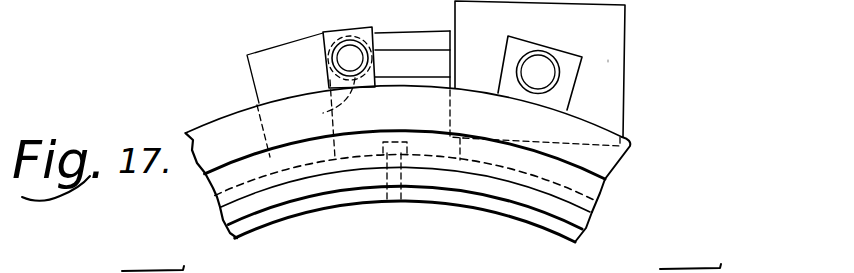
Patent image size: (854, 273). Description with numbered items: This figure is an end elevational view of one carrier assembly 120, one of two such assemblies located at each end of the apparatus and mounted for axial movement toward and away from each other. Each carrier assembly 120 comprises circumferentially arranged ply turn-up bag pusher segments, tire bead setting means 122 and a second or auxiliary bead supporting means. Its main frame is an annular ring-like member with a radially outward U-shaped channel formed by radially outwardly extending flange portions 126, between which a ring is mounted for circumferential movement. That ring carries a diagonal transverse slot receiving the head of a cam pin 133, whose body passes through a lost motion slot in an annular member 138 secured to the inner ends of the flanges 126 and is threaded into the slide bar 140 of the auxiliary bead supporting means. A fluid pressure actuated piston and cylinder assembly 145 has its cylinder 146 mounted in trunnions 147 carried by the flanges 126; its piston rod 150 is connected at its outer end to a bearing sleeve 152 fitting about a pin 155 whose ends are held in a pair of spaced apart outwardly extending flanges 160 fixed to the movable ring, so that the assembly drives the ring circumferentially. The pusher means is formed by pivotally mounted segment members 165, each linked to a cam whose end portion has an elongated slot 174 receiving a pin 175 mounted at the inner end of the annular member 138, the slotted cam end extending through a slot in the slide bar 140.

The carrier assembly 120 is at (250, 35).
The tire bead setting means 122 is at (578, 238).
The flange portions 126 is at (597, 130).
The cam pin 133 is at (399, 203).
The annular member 138 is at (587, 218).
The slide bar 140 is at (463, 203).
The piston and cylinder assembly 145 is at (627, 15).
The cylinder 146 is at (610, 33).
The trunnions 147 is at (568, 78).
The piston rod 150 is at (428, 70).
The bearing sleeve 152 is at (327, 110).
The pin 155 is at (348, 62).
The flanges 160 is at (324, 33).
The segment members 165 is at (260, 87).
The elongated slot 174 is at (356, 7).
The pin 175 is at (410, 7).